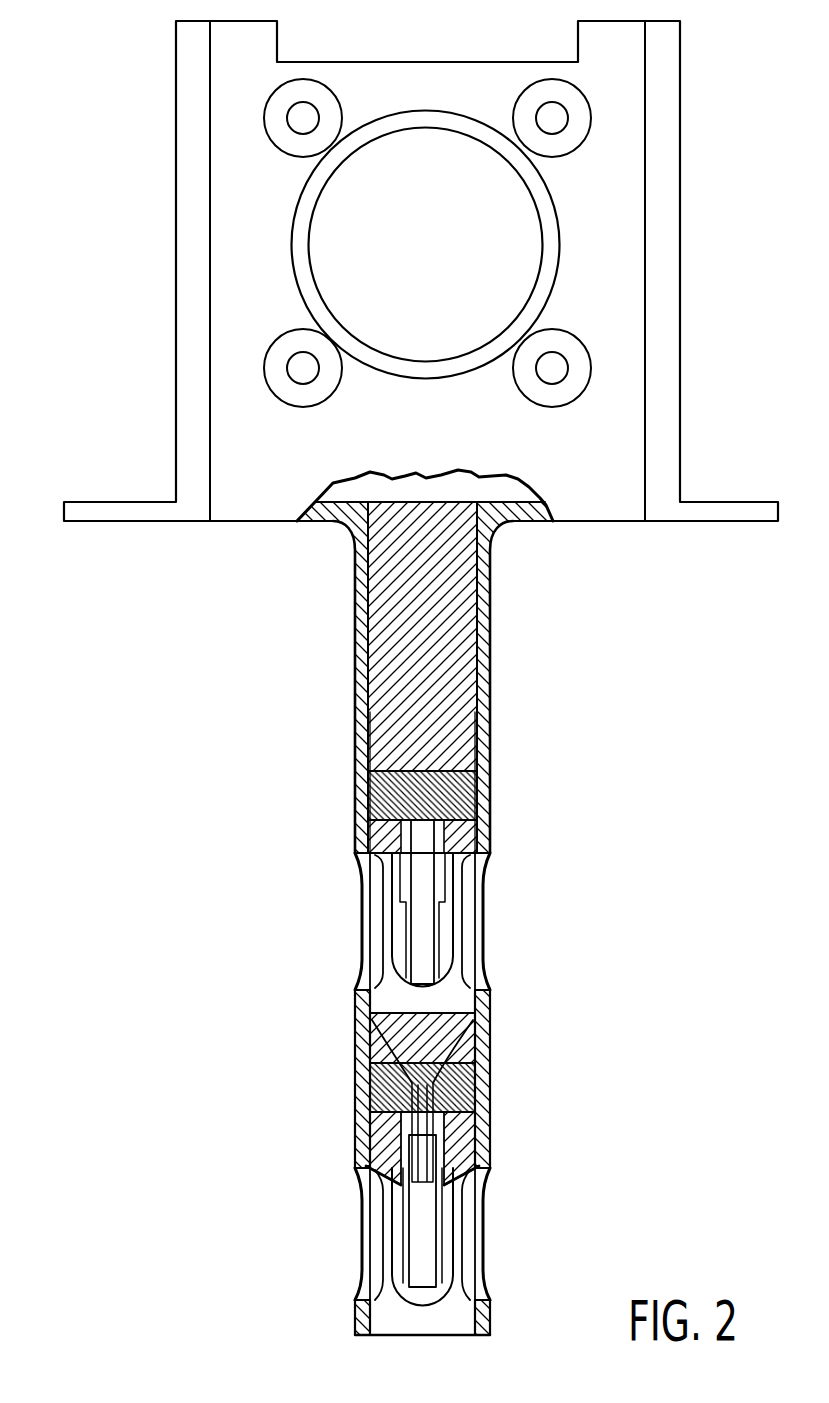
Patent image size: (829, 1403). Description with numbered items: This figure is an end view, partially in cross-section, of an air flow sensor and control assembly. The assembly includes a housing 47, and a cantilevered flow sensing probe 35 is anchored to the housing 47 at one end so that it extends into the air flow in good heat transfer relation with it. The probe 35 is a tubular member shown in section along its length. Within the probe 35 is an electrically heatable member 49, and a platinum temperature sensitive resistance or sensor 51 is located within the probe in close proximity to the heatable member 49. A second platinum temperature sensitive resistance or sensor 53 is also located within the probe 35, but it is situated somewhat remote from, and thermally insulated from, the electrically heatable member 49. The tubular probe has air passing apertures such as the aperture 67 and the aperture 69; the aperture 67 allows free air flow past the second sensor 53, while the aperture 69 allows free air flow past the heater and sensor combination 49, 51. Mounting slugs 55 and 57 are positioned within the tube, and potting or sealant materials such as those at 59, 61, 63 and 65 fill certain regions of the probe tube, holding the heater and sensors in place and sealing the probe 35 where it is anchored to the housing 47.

The housing 47 is at (680, 192).
The flow sensing probe 35 is at (490, 627).
The potting or sealant material 59 is at (392, 625).
The potting or sealant material 65 is at (382, 792).
The mounting slug 57 is at (457, 837).
The second platinum temperature sensitive resistance or sensor 53 is at (422, 943).
The air passing aperture 67 is at (477, 900).
The potting or sealant material 63 is at (457, 1023).
The potting or sealant material 61 is at (375, 1094).
The mounting slug 55 is at (380, 1138).
The electrically heatable member 49 is at (377, 1215).
The air passing aperture 69 is at (473, 1235).
The platinum temperature sensitive resistance or sensor 51 is at (420, 1262).